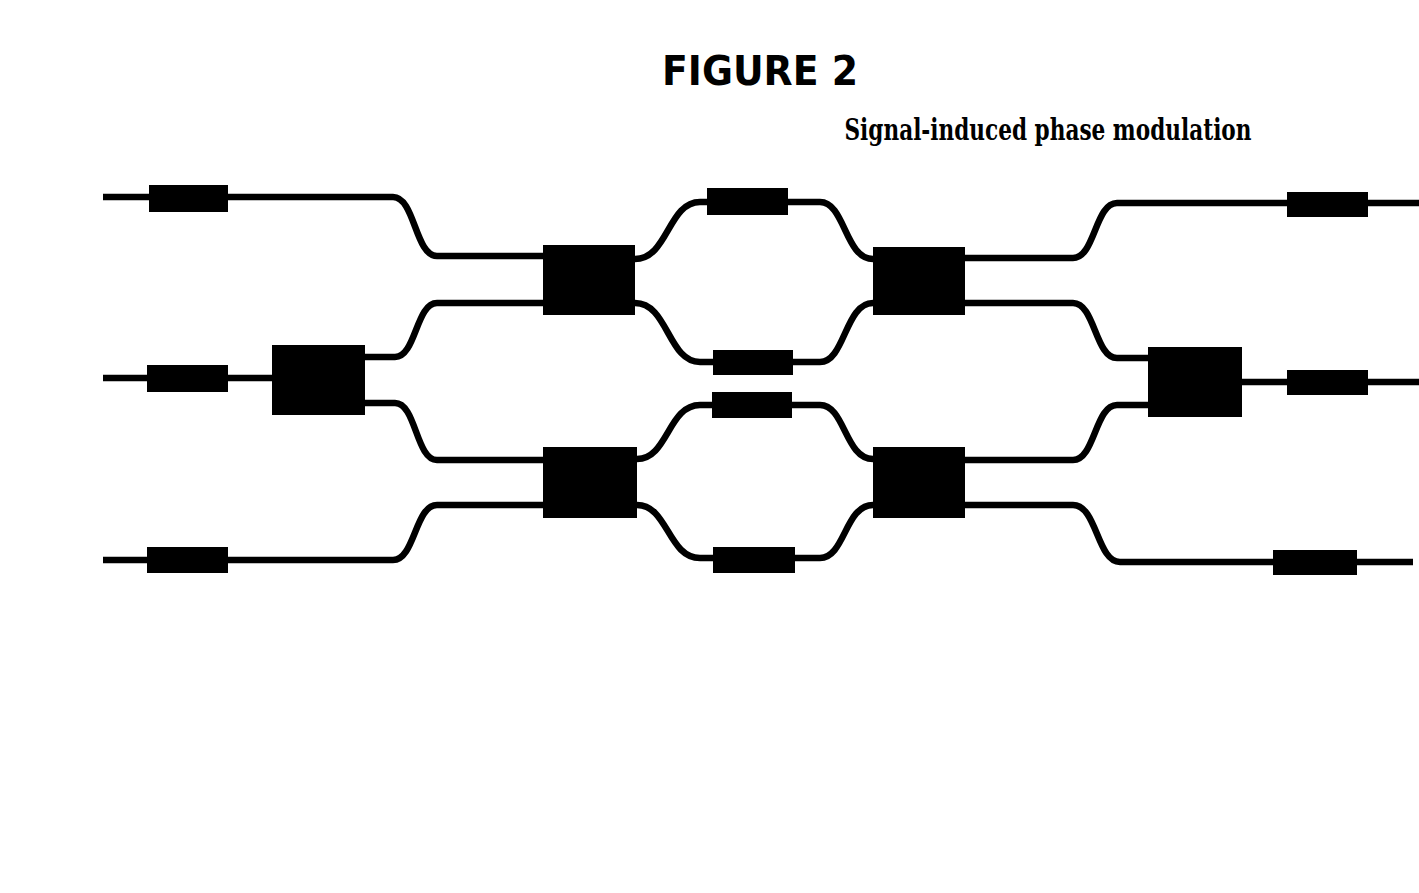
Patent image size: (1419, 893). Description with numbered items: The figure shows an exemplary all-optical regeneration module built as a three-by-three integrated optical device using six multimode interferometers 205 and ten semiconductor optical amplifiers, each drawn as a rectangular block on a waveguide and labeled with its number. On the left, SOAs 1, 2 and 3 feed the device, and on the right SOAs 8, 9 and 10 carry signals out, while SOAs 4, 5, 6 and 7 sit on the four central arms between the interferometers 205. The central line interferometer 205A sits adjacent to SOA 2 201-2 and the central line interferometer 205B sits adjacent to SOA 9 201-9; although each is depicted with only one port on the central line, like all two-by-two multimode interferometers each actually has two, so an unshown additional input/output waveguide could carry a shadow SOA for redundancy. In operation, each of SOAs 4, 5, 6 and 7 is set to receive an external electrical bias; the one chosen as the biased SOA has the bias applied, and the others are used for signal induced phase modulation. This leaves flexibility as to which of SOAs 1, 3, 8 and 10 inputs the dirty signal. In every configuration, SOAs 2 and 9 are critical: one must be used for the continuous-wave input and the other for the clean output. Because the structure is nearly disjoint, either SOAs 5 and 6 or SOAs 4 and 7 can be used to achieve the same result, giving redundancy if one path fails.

The semiconductor optical amplifier 1 is at (165, 170).
The semiconductor optical amplifier 2 is at (187, 377).
The semiconductor optical amplifier 3 is at (165, 526).
The semiconductor optical amplifier 4 is at (747, 168).
The semiconductor optical amplifier 5 is at (753, 332).
The semiconductor optical amplifier 6 is at (752, 431).
The semiconductor optical amplifier 7 is at (754, 598).
The semiconductor optical amplifier 8 is at (1353, 173).
The semiconductor optical amplifier 9 is at (1330, 393).
The semiconductor optical amplifier 10 is at (1343, 528).
The SOA 2 201-2 is at (202, 392).
The SOA 9 201-9 is at (1333, 397).
The multimode interferometer 205 is at (600, 315).
The central line interferometer 205A is at (312, 347).
The central line interferometer 205B is at (1167, 345).